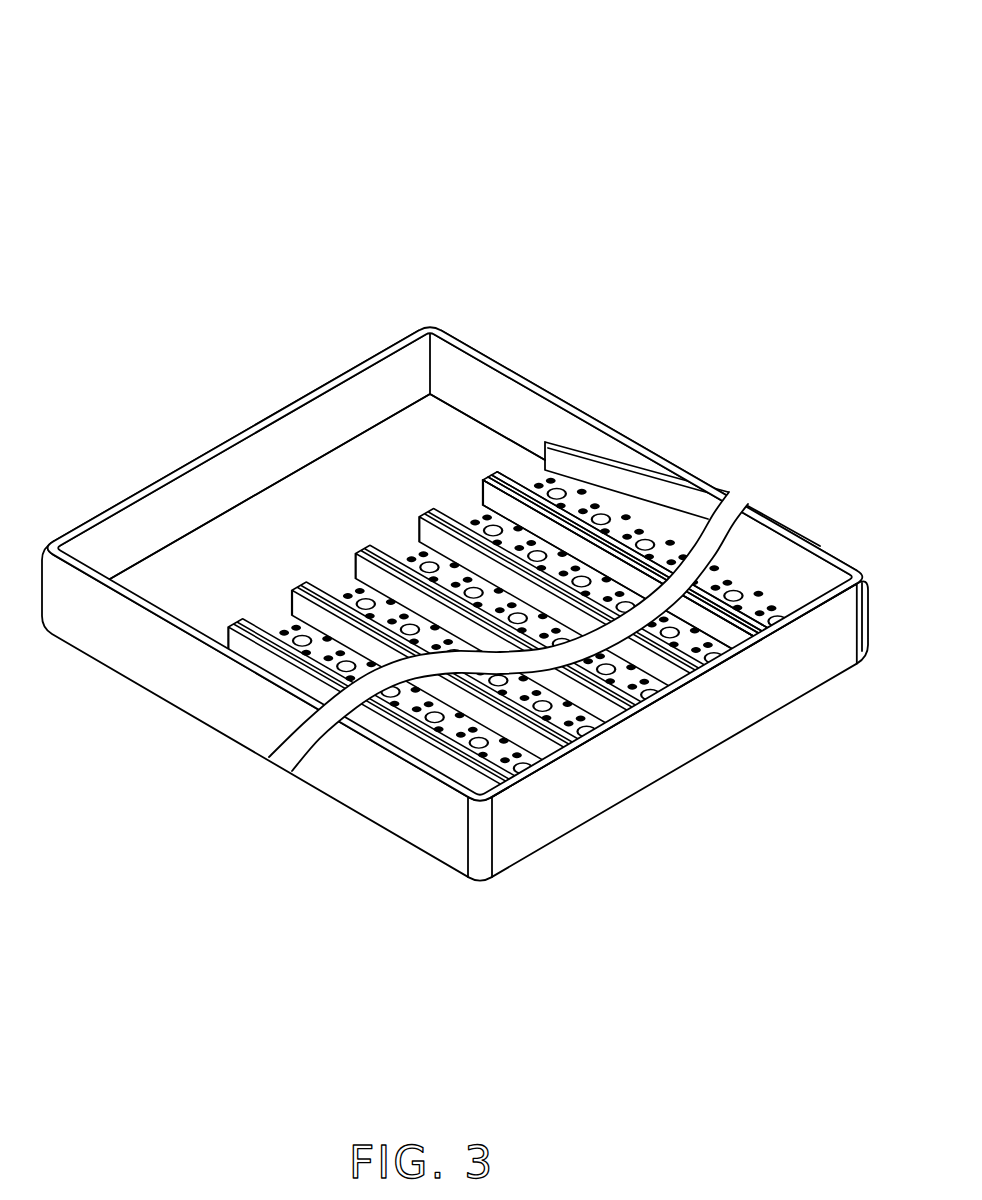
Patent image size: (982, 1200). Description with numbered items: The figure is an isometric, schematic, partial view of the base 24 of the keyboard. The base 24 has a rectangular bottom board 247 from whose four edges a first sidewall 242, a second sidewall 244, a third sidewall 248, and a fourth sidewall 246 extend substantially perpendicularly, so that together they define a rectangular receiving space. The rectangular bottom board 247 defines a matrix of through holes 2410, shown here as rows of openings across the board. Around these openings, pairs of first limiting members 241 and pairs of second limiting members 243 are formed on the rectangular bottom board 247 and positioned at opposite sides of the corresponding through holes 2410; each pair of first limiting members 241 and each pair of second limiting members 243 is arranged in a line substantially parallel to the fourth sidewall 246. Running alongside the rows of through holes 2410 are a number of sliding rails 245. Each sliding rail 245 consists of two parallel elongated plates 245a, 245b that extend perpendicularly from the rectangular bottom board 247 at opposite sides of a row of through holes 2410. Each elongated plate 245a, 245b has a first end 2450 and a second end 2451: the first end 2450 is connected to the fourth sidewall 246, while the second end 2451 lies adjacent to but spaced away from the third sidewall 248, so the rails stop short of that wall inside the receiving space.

The base 24 is at (167, 88).
The first limiting member 241 is at (549, 561).
The through hole 2410 is at (558, 492).
The first sidewall 242 is at (517, 410).
The second limiting member 243 is at (552, 478).
The second sidewall 244 is at (108, 637).
The sliding rail 245 is at (445, 198).
The elongated plate 245a is at (487, 507).
The elongated plate 245b is at (478, 503).
The first end 2450 is at (757, 638).
The second end 2451 is at (478, 485).
The fourth sidewall 246 is at (605, 782).
The rectangular bottom board 247 is at (323, 493).
The third sidewall 248 is at (210, 480).